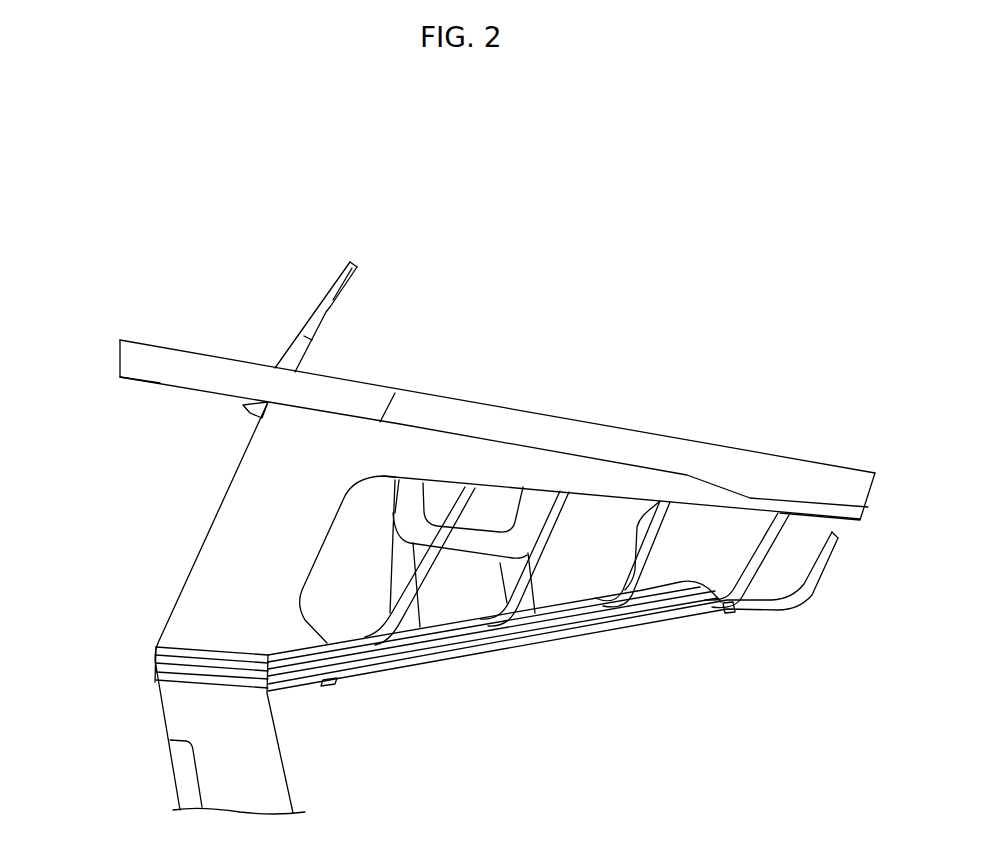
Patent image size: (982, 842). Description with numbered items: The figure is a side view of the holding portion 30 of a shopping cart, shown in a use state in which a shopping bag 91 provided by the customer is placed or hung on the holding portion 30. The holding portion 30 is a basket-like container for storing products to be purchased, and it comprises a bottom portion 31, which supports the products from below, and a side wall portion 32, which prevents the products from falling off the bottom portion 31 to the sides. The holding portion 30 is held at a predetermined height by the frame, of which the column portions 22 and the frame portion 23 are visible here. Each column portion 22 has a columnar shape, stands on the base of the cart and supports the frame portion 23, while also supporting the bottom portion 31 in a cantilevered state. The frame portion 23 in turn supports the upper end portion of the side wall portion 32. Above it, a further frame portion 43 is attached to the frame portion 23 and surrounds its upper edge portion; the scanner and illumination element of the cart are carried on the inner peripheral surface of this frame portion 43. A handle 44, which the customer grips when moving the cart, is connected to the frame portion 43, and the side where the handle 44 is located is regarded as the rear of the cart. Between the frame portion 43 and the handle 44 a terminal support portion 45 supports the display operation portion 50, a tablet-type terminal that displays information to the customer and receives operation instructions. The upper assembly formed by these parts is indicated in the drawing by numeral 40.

The roof side rail 40 is at (460, 389).
The handle 44 is at (125, 358).
The frame portion 43 is at (773, 473).
The frame portion 23 is at (551, 472).
The display operation portion 50 is at (326, 337).
The terminal support portion 45 is at (305, 350).
The column portion 22 is at (237, 520).
The holding portion 30 is at (496, 624).
The bottom portion 31 is at (780, 610).
The side wall portion 32 is at (667, 547).
The shopping bag 91 is at (457, 595).